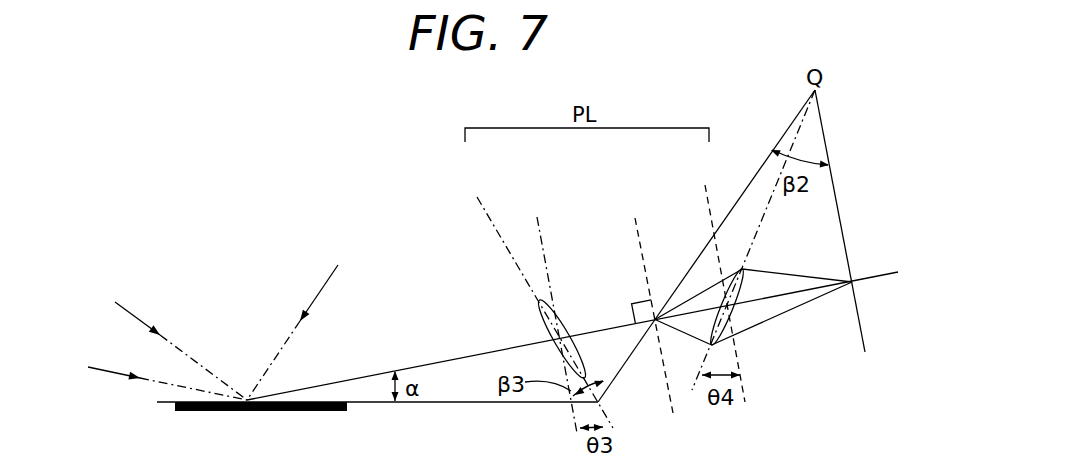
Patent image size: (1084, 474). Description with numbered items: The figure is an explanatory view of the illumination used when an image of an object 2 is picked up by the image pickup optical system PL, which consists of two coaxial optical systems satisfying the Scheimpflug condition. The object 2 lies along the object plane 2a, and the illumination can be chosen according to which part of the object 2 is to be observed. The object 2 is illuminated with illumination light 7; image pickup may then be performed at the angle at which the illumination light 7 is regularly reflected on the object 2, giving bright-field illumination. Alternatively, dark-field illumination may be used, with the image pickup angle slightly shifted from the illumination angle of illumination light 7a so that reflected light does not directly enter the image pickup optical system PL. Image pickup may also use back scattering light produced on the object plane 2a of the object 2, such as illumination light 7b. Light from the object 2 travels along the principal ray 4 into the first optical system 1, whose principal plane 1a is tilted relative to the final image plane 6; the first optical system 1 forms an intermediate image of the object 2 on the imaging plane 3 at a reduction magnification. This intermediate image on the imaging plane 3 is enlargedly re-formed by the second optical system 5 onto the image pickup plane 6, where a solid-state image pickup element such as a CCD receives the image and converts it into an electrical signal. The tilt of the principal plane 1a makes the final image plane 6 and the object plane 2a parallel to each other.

The first optical system 1 is at (557, 318).
The principal plane of the first optical system 1a is at (497, 237).
The object 2 is at (213, 413).
The object plane 2a is at (433, 403).
The imaging plane (intermediate image plane) 3 is at (703, 249).
The principal ray 4 is at (458, 357).
The second optical system 5 is at (731, 317).
The image pickup plane (final image plane) 6 is at (857, 300).
The illumination light 7 is at (167, 370).
The illumination light 7a is at (181, 343).
The illumination light (back scattering light) 7b is at (305, 321).